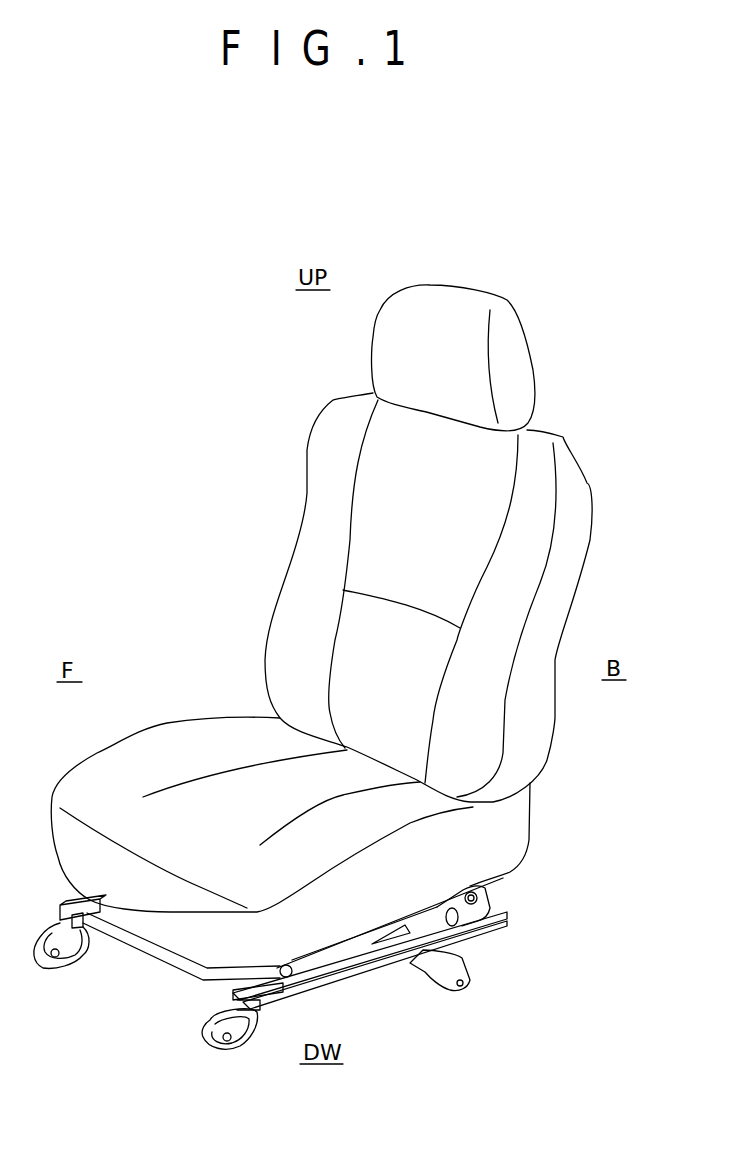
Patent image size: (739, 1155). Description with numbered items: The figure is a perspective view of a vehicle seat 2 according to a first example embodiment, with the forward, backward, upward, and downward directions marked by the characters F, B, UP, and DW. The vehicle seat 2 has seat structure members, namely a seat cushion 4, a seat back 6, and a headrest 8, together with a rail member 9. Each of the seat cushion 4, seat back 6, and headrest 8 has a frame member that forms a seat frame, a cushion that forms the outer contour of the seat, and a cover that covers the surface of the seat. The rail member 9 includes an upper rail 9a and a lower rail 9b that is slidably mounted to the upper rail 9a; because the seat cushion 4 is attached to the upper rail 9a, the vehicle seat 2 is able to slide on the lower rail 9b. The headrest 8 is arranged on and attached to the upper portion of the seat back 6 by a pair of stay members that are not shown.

The vehicle seat 2 is at (565, 386).
The headrest 8 is at (373, 368).
The seat back 6 is at (292, 562).
The seat cushion 4 is at (202, 717).
The rail member 9 is at (574, 876).
The upper rail 9a is at (483, 910).
The lower rail 9b is at (487, 931).